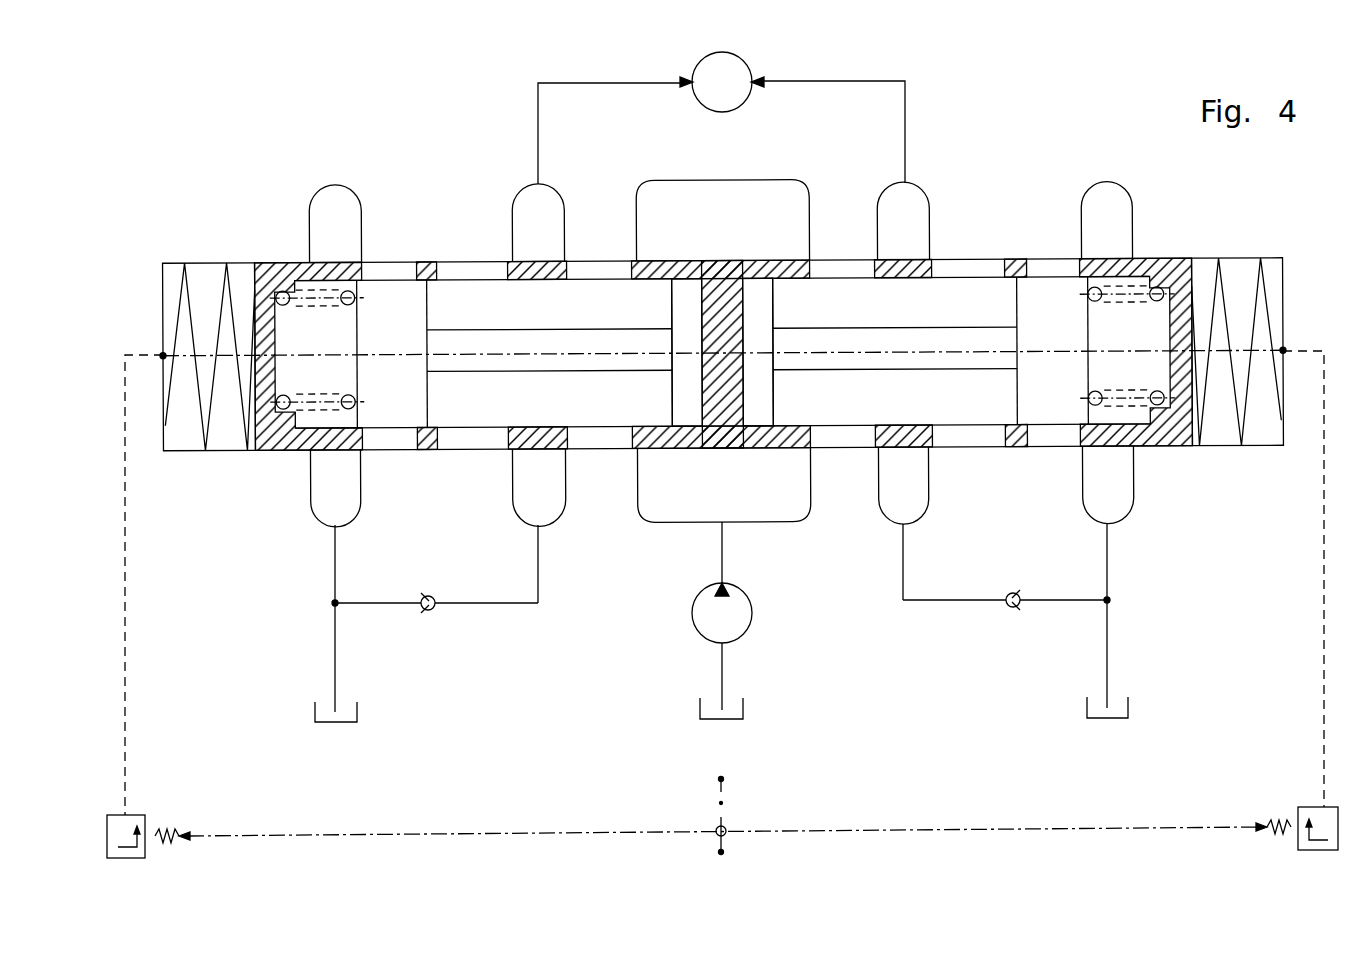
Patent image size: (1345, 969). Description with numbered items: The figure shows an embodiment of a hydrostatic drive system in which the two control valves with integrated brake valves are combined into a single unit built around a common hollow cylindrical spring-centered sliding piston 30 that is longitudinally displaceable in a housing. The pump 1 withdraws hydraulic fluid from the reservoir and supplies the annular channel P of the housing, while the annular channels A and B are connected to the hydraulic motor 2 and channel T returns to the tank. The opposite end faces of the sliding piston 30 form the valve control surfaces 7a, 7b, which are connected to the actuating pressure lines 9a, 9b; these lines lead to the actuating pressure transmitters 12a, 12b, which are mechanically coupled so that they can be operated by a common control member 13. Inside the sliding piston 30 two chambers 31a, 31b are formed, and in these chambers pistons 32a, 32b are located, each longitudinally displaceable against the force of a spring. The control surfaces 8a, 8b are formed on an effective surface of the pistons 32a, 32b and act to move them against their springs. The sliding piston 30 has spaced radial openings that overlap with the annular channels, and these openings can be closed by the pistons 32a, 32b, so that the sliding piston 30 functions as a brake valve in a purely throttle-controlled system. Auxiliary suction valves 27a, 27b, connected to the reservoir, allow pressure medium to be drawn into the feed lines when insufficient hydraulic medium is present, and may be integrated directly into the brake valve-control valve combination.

The pump 1 is at (705, 620).
The hydraulic motor 2 is at (735, 65).
The control surface 7a is at (248, 297).
The control surface 7b is at (1193, 320).
The control surface 8a is at (712, 395).
The control surface 8b is at (737, 400).
The actuating pressure line 9a is at (126, 660).
The actuating pressure line 9b is at (1324, 655).
The actuating pressure transmitter 12a is at (137, 815).
The actuating pressure transmitter 12b is at (1318, 807).
The common control member 13 is at (723, 790).
The auxiliary suction valve 27a is at (433, 612).
The auxiliary suction valve 27b is at (1015, 609).
The sliding piston 30 is at (430, 260).
The chamber 31a is at (586, 307).
The chamber 31b is at (969, 318).
The piston 32a is at (397, 331).
The piston 32b is at (1056, 324).